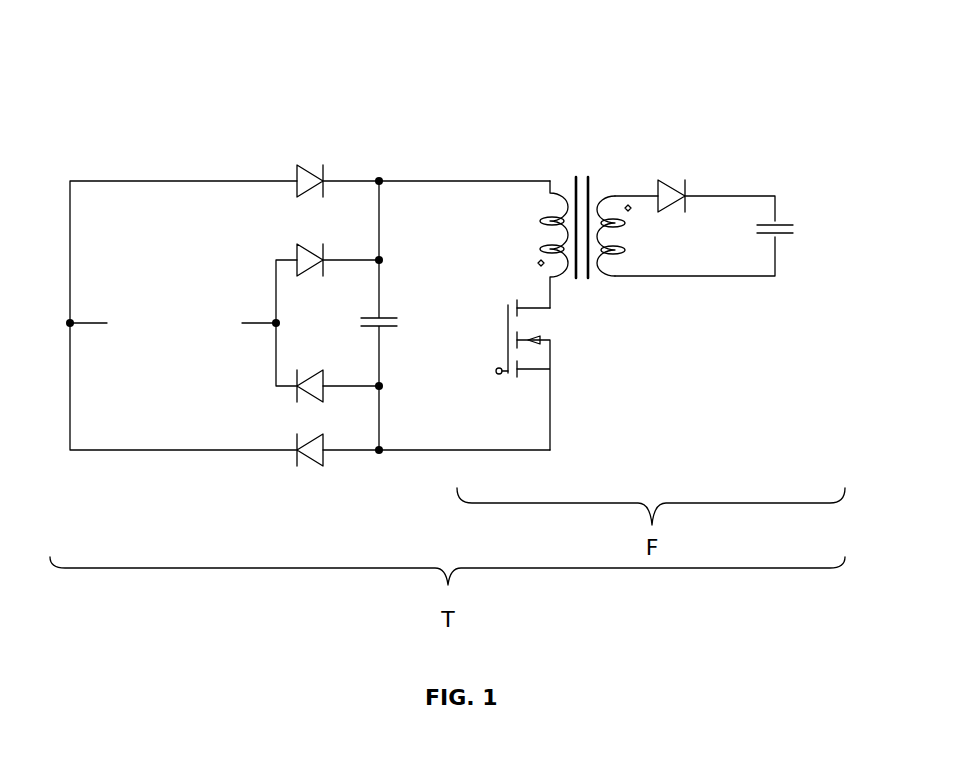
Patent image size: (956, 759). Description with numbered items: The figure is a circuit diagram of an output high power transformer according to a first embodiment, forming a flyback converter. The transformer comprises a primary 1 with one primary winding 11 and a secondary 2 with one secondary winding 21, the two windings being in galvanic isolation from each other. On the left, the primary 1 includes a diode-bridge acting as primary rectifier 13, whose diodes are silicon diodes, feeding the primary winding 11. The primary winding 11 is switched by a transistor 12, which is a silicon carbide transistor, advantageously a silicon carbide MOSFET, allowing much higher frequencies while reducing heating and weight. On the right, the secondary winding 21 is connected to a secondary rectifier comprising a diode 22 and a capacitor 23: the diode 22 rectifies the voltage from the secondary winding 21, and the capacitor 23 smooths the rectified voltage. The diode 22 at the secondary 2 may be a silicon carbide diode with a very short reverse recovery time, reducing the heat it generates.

The primary 1 is at (341, 250).
The secondary 2 is at (722, 270).
The primary winding 11 is at (560, 192).
The transistor 12 is at (550, 345).
The primary rectifier 13 is at (310, 128).
The secondary winding 21 is at (618, 277).
The diode 22 is at (674, 190).
The capacitor 23 is at (782, 222).